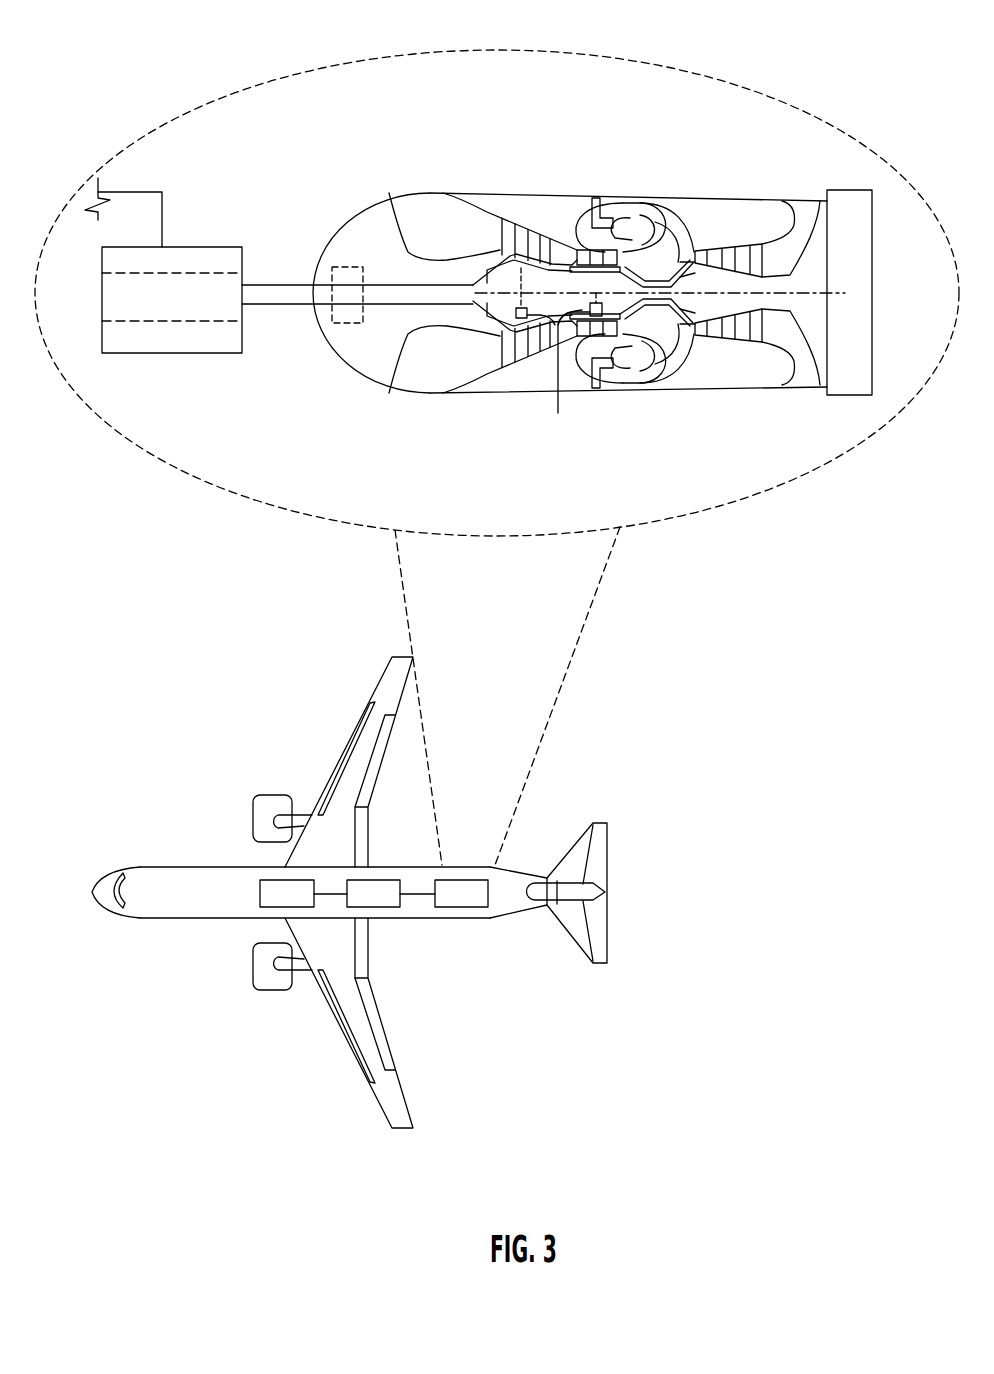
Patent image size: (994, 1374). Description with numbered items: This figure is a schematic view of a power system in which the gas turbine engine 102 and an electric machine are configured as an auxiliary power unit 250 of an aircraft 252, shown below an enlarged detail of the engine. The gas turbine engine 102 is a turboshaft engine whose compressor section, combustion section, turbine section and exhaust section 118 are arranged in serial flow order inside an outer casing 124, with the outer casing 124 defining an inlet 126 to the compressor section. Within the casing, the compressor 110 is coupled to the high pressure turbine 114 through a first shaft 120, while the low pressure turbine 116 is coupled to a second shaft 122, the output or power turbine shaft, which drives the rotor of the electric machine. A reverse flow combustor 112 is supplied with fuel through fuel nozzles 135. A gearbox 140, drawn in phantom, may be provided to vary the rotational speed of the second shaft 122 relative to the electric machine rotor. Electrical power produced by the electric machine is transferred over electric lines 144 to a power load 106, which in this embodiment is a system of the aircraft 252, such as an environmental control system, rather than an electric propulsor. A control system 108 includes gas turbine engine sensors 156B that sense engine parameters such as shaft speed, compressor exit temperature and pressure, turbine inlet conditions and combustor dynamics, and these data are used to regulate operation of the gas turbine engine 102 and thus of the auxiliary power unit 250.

The gas turbine engine 102 is at (663, 86).
The electric lines 144 is at (123, 192).
The gearbox 140 is at (332, 315).
The second shaft 122 is at (367, 224).
The exhaust section 118 is at (431, 199).
The low pressure turbine 116 is at (536, 213).
The high pressure turbine 114 is at (566, 237).
The reverse flow combustor 112 is at (641, 206).
The fuel nozzles 135 is at (593, 202).
The outer casing 124 is at (755, 224).
The compressor 110 is at (727, 203).
The inlet 126 is at (807, 211).
The first shaft 120 is at (748, 310).
The gas turbine engine sensors 156B is at (559, 359).
The aircraft 252 is at (187, 776).
The power load 106 is at (275, 880).
The control system 108 is at (383, 918).
The auxiliary power unit 250 is at (462, 893).